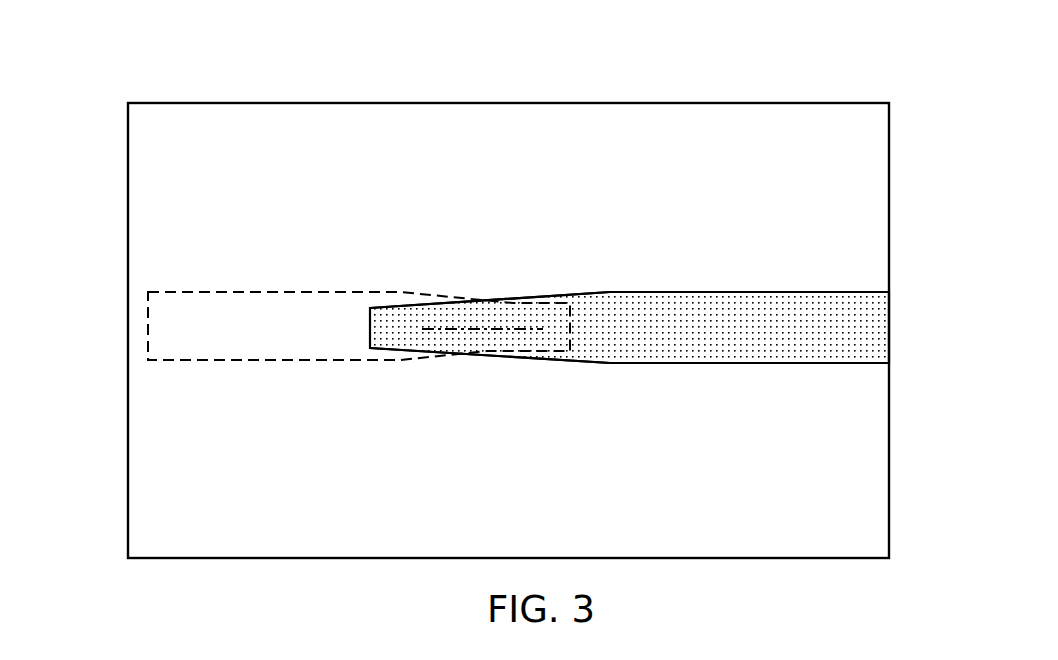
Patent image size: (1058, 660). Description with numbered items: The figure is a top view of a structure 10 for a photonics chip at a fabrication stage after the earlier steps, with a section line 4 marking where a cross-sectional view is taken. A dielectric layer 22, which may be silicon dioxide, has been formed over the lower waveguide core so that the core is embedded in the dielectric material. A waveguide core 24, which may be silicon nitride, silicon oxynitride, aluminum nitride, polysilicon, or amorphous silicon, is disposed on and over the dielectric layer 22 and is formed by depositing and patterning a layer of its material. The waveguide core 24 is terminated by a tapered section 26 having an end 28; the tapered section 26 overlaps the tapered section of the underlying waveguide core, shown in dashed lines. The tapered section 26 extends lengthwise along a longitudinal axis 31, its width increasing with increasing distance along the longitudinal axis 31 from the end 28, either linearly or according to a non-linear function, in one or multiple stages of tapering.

The structure 10 is at (148, 66).
The dielectric layer 22 is at (197, 473).
The waveguide core 24 is at (692, 263).
The tapered section 26 is at (472, 318).
The end 28 is at (370, 330).
The longitudinal axis 31 is at (462, 327).
The section line 4- 4 is at (73, 335).